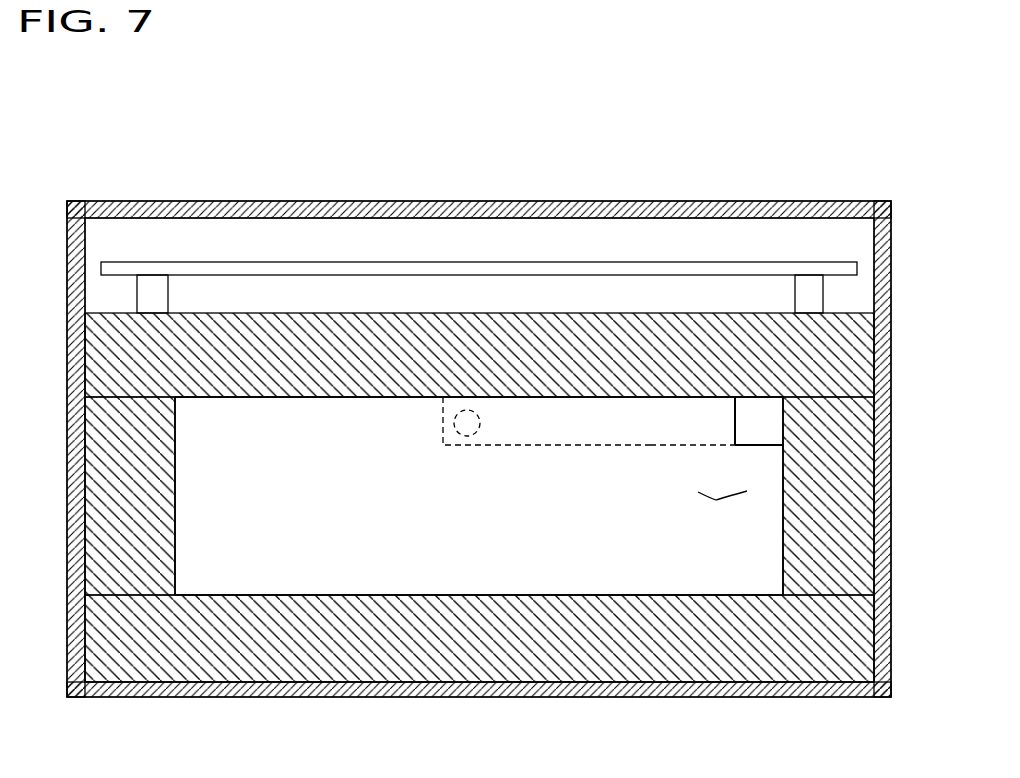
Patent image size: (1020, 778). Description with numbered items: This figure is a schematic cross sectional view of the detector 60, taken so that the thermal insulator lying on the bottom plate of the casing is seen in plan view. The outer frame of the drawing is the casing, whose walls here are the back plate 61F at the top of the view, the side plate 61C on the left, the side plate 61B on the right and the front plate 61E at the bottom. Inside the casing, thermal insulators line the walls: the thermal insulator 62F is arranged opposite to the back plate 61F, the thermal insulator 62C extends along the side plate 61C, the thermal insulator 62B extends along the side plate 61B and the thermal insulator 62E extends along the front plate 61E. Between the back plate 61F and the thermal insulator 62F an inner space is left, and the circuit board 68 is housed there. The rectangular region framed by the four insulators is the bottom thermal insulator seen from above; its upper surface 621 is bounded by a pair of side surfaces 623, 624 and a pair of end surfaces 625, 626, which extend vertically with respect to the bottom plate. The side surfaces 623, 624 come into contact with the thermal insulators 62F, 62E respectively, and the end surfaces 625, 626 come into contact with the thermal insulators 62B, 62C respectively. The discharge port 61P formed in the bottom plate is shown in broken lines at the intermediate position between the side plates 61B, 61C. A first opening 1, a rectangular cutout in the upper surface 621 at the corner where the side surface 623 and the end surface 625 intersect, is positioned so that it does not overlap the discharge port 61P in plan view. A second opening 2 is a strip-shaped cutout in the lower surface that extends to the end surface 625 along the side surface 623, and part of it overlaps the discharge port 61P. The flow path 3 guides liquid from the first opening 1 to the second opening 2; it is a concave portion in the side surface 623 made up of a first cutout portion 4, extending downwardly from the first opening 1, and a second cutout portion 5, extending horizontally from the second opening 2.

The detector 60 is at (888, 197).
The back plate 61F is at (453, 213).
The side plate 61C is at (78, 488).
The side plate 61B is at (883, 507).
The front plate 61E is at (487, 688).
The discharge port 61P is at (467, 410).
The thermal insulator 62F is at (417, 368).
The thermal insulator 62C is at (113, 498).
The thermal insulator 62B is at (852, 517).
The thermal insulator 62E is at (445, 633).
The upper surface 621 is at (492, 520).
The side surface 623 is at (655, 398).
The side surface 624 is at (290, 597).
The end surface 625 is at (785, 553).
The end surface 626 is at (175, 555).
The circuit board 68 is at (320, 260).
The first opening 1 is at (771, 423).
The second opening 2 is at (525, 450).
The flow path 3 is at (722, 512).
The first cutout portion 4 is at (692, 422).
The second cutout portion 5 is at (745, 423).